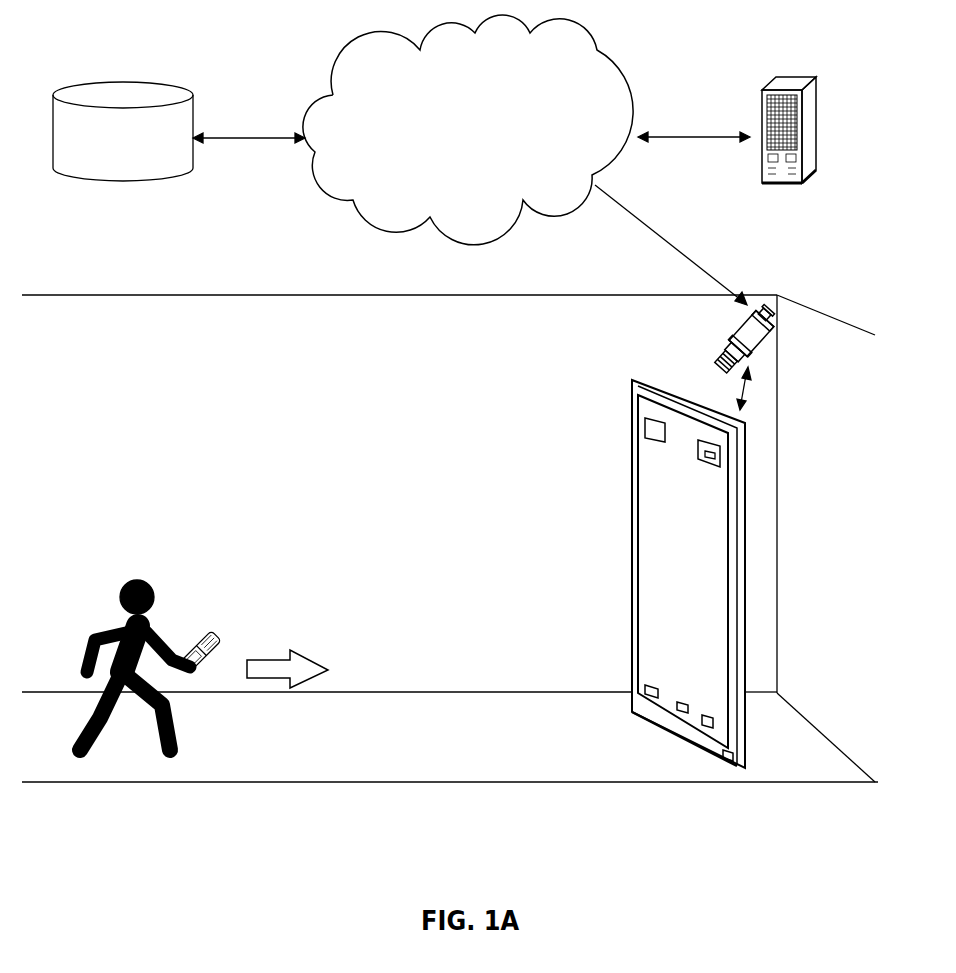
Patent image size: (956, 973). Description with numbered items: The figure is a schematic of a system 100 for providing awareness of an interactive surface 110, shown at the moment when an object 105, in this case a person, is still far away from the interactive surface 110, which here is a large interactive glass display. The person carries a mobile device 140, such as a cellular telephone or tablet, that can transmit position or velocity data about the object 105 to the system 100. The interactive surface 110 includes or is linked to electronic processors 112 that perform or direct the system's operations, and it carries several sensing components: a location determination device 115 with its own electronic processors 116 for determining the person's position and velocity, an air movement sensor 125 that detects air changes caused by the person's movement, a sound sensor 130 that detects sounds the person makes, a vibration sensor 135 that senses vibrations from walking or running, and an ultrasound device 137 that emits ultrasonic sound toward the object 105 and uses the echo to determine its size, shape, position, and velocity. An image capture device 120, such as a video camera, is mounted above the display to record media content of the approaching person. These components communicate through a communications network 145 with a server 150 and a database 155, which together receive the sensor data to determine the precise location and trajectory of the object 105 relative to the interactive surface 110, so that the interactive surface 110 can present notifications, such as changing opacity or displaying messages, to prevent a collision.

The system 100 is at (455, 800).
The object 105 is at (180, 740).
The interactive surface 110 is at (630, 450).
The electronic processors 112 is at (727, 768).
The location determination device 115 is at (720, 463).
The electronic processors 116 is at (715, 452).
The image capture device 120 is at (777, 332).
The air movement sensor 125 is at (645, 687).
The sound sensor 130 is at (688, 703).
The vibration sensor 135 is at (713, 727).
The ultrasound device 137 is at (642, 423).
The mobile device 140 is at (213, 633).
The communications network 145 is at (468, 130).
The server 150 is at (777, 188).
The database 155 is at (123, 180).